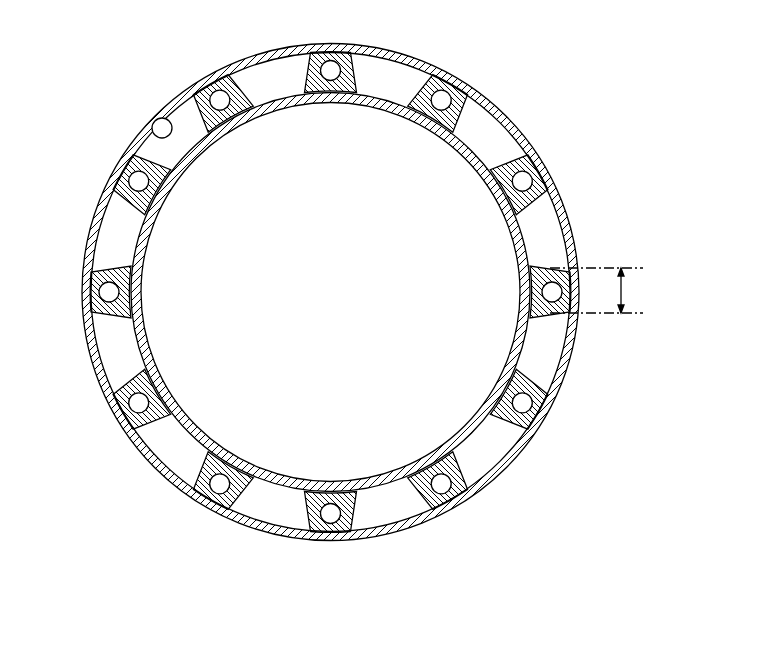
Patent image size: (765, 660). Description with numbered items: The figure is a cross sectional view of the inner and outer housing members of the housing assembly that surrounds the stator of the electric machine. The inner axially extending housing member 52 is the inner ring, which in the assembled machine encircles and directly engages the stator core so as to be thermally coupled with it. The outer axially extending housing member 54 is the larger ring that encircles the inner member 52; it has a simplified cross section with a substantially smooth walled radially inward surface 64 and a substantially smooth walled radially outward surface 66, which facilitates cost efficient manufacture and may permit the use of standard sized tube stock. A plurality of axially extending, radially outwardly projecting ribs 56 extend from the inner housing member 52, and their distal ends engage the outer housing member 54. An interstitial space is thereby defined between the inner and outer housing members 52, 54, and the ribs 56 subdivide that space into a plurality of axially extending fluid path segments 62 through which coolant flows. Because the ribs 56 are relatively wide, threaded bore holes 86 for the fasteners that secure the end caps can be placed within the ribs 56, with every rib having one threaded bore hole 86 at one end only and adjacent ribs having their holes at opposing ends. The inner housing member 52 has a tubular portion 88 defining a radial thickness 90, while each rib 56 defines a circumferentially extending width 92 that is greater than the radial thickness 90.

The inner axially extending housing member 52 is at (462, 152).
The outer axially extending housing member 54 is at (329, 273).
The ribs 56 is at (330, 270).
The fluid path segments 62 is at (388, 310).
The radially inward surface 64 is at (152, 130).
The radially outward surface 66 is at (329, 291).
The threaded bore holes 86 is at (443, 98).
The tubular portion 88 is at (378, 291).
The radial thickness 90 is at (378, 291).
The circumferentially extending width 92 is at (627, 297).